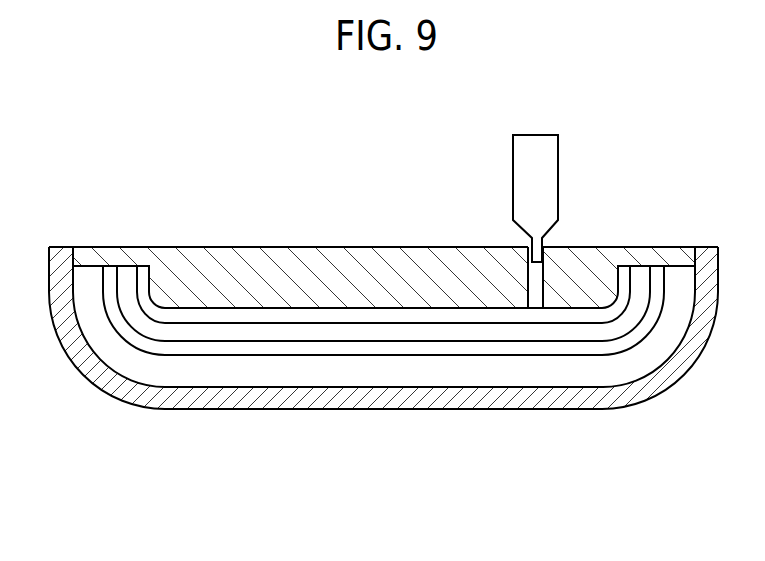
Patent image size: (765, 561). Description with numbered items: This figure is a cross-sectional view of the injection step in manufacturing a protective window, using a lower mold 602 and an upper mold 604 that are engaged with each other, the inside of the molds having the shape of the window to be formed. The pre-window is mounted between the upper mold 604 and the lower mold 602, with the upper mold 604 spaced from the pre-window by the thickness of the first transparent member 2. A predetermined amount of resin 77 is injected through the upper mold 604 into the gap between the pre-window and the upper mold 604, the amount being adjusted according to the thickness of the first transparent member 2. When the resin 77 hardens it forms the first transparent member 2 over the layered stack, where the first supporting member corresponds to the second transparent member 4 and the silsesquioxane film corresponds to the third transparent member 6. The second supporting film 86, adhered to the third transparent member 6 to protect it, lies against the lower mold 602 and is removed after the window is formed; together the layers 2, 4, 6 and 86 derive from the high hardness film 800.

The lower mold 602 is at (232, 398).
The upper mold 604 is at (354, 268).
The resin 77 is at (548, 170).
The first transparent member 2 is at (315, 315).
The second transparent member 4 is at (372, 332).
The third transparent member 6 is at (433, 349).
The second supporting film 86 is at (493, 370).
The high hardness film 800 is at (383, 392).